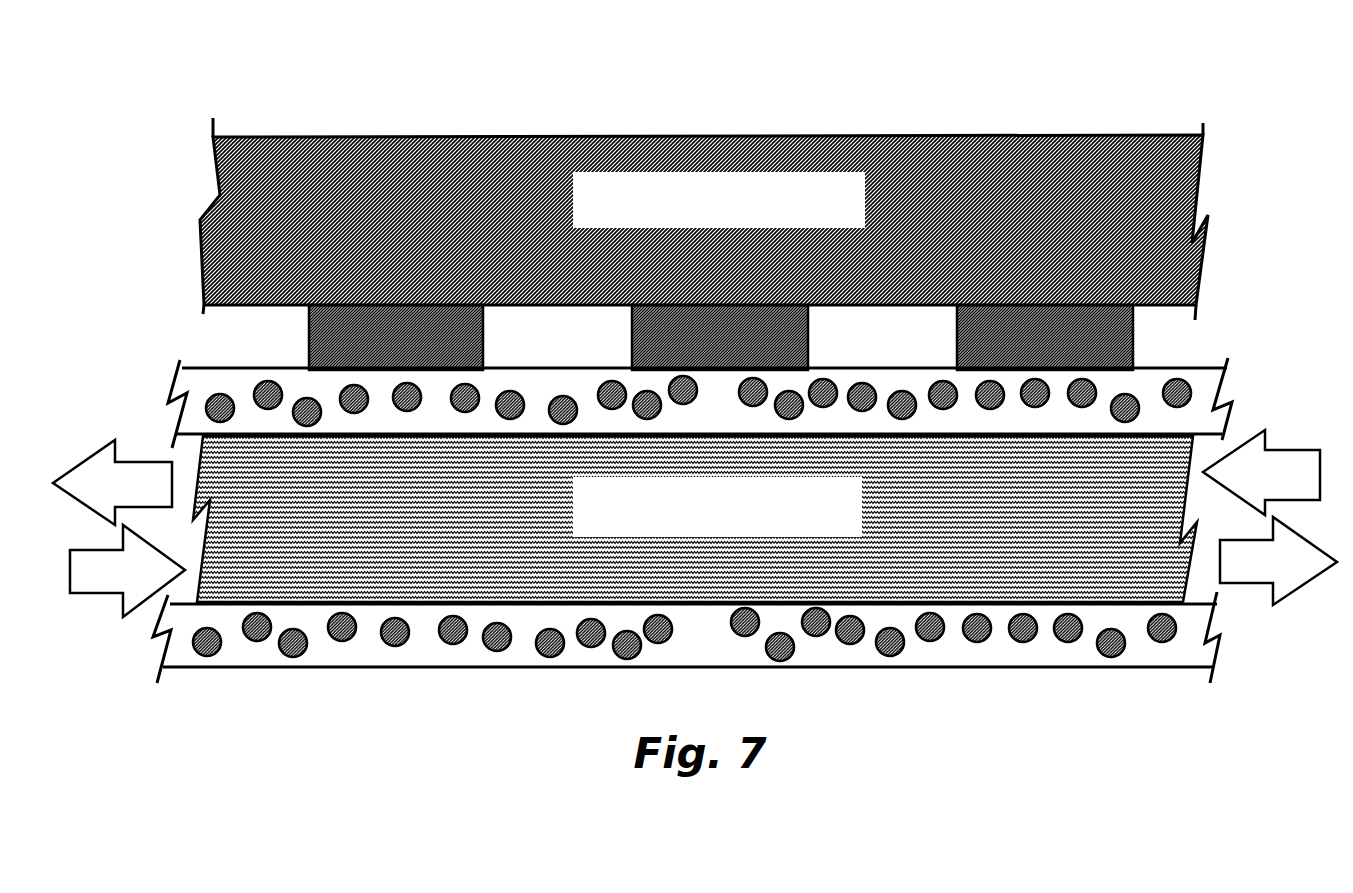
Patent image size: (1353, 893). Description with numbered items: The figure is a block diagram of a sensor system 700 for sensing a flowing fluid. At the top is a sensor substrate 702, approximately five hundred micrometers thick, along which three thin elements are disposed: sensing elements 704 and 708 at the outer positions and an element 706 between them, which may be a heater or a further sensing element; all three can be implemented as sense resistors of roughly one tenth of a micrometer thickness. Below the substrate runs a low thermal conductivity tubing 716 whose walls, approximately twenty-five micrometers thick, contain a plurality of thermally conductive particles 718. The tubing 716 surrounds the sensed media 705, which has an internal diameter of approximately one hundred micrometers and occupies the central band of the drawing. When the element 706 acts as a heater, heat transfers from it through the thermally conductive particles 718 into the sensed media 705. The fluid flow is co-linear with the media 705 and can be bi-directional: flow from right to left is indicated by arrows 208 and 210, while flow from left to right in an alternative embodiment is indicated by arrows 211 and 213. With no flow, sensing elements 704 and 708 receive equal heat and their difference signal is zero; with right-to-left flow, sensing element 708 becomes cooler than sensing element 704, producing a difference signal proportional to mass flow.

The sensor system 700 is at (160, 119).
The sensor substrate 702 is at (737, 275).
The sensing element 704 is at (412, 352).
The heater 706 is at (737, 352).
The sensing element 708 is at (1064, 352).
The media 705 is at (737, 585).
The low thermal conductivity tubing 716 is at (737, 423).
The thermally conductive particles 718 is at (304, 398).
The arrow 208 is at (1306, 487).
The arrow 210 is at (154, 497).
The arrow 211 is at (132, 585).
The arrow 213 is at (1282, 575).